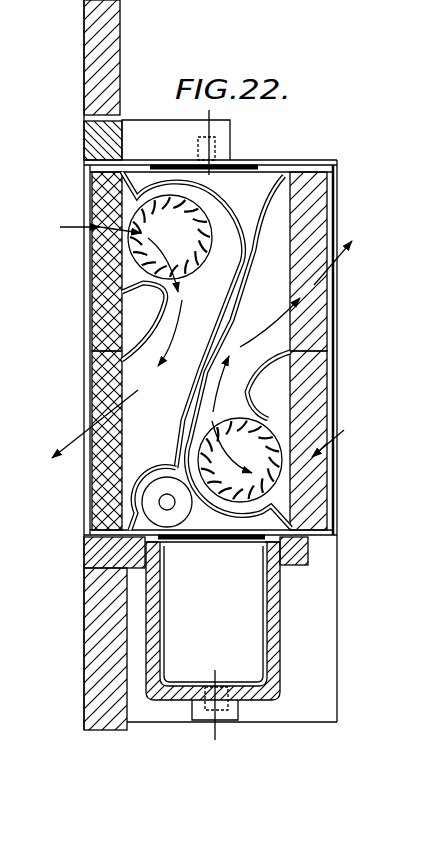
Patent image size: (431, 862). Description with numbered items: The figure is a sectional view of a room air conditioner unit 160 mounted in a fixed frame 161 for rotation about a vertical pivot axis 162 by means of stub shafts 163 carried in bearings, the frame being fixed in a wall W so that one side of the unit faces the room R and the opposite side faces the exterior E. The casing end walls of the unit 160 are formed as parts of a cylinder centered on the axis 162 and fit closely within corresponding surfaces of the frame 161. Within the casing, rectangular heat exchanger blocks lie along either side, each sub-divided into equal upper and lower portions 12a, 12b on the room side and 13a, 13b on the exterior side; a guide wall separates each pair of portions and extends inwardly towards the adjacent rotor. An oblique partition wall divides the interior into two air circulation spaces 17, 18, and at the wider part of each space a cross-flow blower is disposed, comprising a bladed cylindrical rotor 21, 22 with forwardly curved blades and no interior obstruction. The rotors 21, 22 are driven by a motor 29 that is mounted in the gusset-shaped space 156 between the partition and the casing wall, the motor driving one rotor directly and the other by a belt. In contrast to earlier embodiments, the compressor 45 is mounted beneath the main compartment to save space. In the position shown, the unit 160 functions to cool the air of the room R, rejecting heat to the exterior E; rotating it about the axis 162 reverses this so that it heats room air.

The wall W is at (113, 40).
The frame 161 is at (91, 134).
The unit 160 is at (340, 162).
The vertical pivot axis 162 is at (208, 114).
The stub shafts 163 is at (215, 152).
The upper portion of heat exchanger block 12a is at (108, 253).
The lower portion of heat exchanger block 12b is at (105, 382).
The upper portion of heat exchanger block 13a is at (321, 217).
The lower portion of heat exchanger block 13b is at (322, 398).
The air circulation space 17 is at (207, 317).
The air circulation space 18 is at (267, 310).
The bladed cylindrical rotor 21 is at (147, 208).
The bladed cylindrical rotor 22 is at (252, 475).
The gusset-shaped space 156 is at (152, 510).
The motor 29 is at (144, 522).
The compressor 45 is at (232, 623).
The room R is at (64, 369).
The exterior E is at (373, 368).